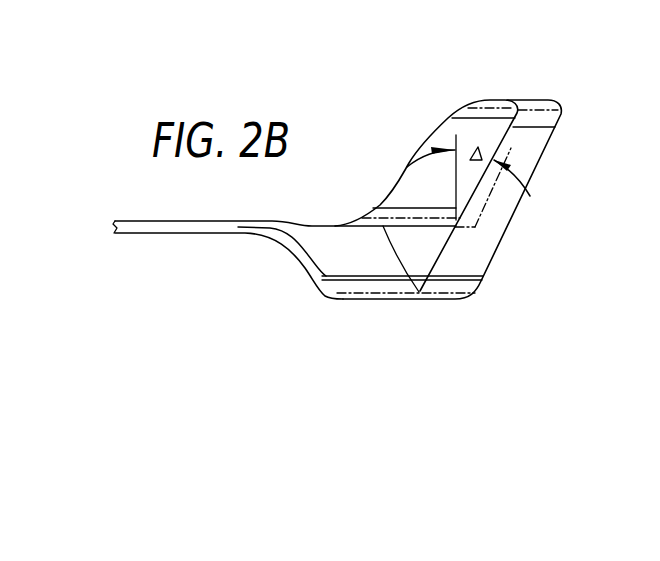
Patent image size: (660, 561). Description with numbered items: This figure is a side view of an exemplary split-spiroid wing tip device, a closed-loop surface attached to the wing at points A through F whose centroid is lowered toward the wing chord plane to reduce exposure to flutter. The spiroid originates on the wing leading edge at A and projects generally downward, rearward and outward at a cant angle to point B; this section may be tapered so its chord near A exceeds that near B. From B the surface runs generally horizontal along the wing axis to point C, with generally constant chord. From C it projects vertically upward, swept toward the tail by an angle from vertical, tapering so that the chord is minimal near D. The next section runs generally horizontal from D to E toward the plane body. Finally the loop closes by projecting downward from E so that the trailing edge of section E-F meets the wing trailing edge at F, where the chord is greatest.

The leading-edge origin point A is at (243, 234).
The lower outboard transition point B is at (332, 300).
The lower rear transition point C is at (394, 300).
The upper transition point D is at (555, 100).
The upper inboard transition point E is at (523, 99).
The wing trailing-edge attachment point F is at (475, 227).